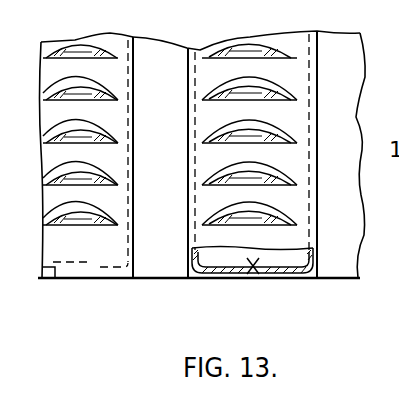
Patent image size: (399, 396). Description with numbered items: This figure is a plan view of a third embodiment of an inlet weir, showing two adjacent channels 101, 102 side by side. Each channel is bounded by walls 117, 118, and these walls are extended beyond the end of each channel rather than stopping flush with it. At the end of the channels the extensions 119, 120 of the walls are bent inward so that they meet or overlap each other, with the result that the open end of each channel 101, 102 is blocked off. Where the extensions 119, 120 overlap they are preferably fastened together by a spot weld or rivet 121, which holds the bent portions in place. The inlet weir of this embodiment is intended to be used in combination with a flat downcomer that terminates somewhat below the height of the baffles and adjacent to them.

The channel 101 is at (115, 43).
The channel 102 is at (300, 50).
The wall 117 is at (134, 153).
The wall 118 is at (188, 237).
The extension 119 is at (55, 277).
The extension 120 is at (100, 280).
The spot weld or rivet 121 is at (255, 277).